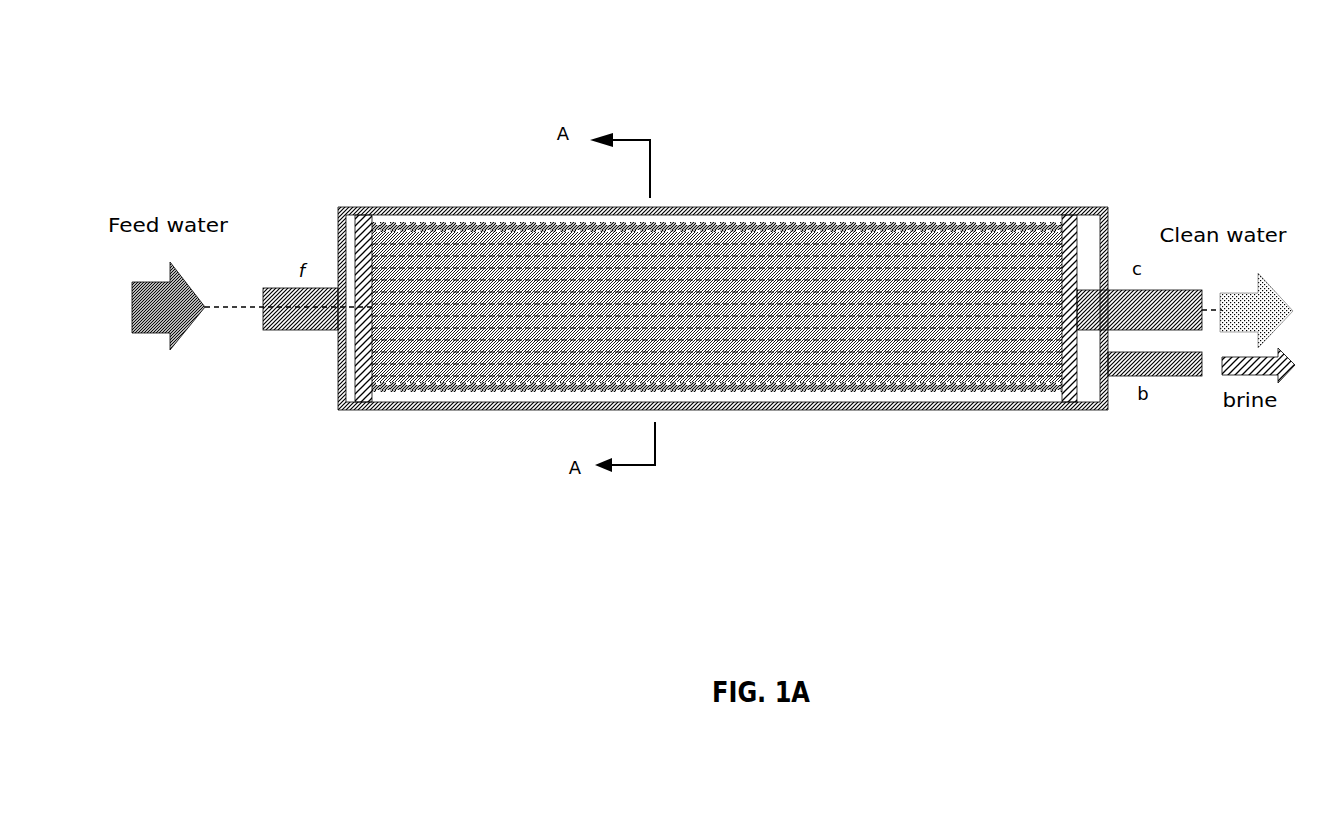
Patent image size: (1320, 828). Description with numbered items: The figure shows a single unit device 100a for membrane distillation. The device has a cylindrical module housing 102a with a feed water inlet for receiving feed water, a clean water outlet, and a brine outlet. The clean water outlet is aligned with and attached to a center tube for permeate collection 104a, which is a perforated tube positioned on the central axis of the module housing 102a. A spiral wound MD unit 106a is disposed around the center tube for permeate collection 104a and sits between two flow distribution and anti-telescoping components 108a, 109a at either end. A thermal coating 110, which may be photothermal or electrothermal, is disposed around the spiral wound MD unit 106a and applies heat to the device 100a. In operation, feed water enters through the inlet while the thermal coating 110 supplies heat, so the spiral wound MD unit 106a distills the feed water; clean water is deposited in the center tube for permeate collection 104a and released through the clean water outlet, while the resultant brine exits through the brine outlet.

The single unit device 100a is at (168, 64).
The cylindrical module housing 102a is at (723, 264).
The center tube for permeate collection 104a is at (717, 409).
The spiral wound MD unit 106a is at (717, 249).
The flow distribution and anti-telescoping component 108a is at (336, 365).
The flow distribution and anti-telescoping component 109a is at (1097, 253).
The thermal coating 110 is at (717, 256).